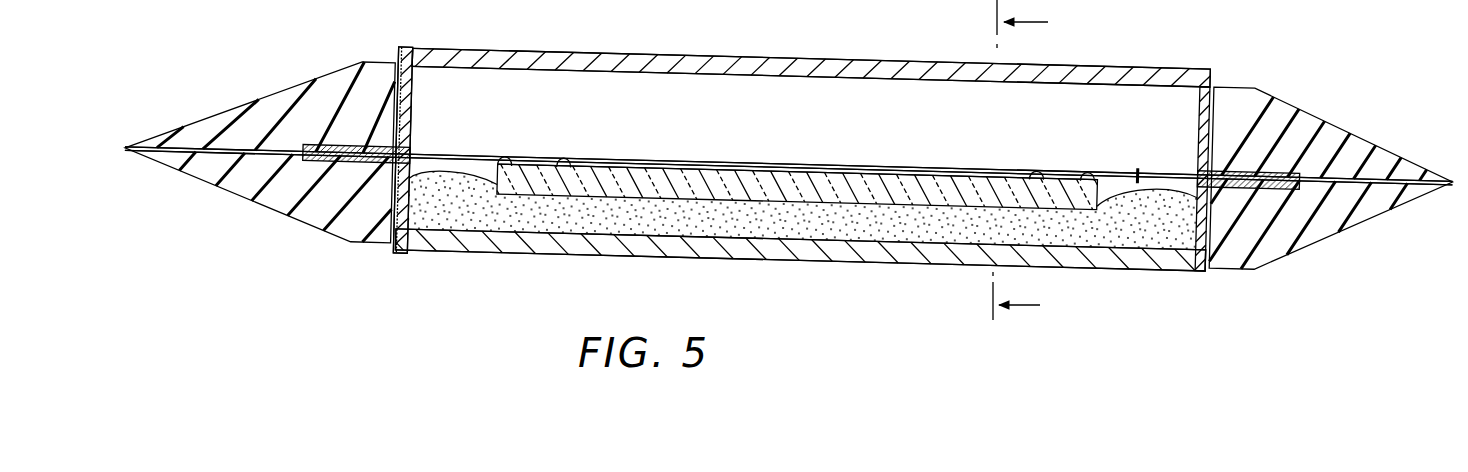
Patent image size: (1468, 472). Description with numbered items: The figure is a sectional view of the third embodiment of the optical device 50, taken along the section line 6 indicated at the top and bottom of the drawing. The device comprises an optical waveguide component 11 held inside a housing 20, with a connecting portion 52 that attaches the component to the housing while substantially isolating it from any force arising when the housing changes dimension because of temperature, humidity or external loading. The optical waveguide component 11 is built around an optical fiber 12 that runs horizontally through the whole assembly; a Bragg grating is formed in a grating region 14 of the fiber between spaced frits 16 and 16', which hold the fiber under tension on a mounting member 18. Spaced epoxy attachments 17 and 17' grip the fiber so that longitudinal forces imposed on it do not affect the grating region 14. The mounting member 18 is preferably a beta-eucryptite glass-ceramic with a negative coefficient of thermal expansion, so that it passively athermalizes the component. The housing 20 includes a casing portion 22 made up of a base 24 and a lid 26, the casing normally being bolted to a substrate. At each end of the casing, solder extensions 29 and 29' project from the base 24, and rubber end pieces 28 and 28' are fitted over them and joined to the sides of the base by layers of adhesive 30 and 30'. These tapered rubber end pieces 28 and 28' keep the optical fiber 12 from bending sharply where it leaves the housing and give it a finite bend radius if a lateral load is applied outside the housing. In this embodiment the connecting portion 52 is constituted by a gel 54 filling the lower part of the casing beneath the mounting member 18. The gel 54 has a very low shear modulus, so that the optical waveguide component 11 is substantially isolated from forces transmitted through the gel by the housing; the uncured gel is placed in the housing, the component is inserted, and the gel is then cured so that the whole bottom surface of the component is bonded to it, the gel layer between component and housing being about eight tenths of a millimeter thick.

The section line 6- 6 is at (1030, 160).
The optical waveguide component 11 is at (853, 163).
The optical fiber 12 is at (1138, 177).
The grating region 14 is at (793, 165).
The frit 16 is at (581, 149).
The frit 16' is at (1018, 158).
The epoxy attachment 17 is at (507, 144).
The epoxy attachment 17' is at (1076, 158).
The mounting member 18 is at (663, 183).
The housing 20 is at (370, 270).
The casing portion 22 is at (453, 262).
The base 24 is at (533, 242).
The lid 26 is at (457, 48).
The rubber end piece 28 is at (259, 143).
The rubber end piece 28' is at (1332, 175).
The solder extension 29 is at (380, 124).
The solder extension 29' is at (1230, 154).
The adhesive layer 30 is at (383, 136).
The adhesive layer 30' is at (1223, 157).
The optical device 50 is at (1080, 52).
The connecting portion 52 is at (1140, 166).
The gel 54 is at (1128, 233).